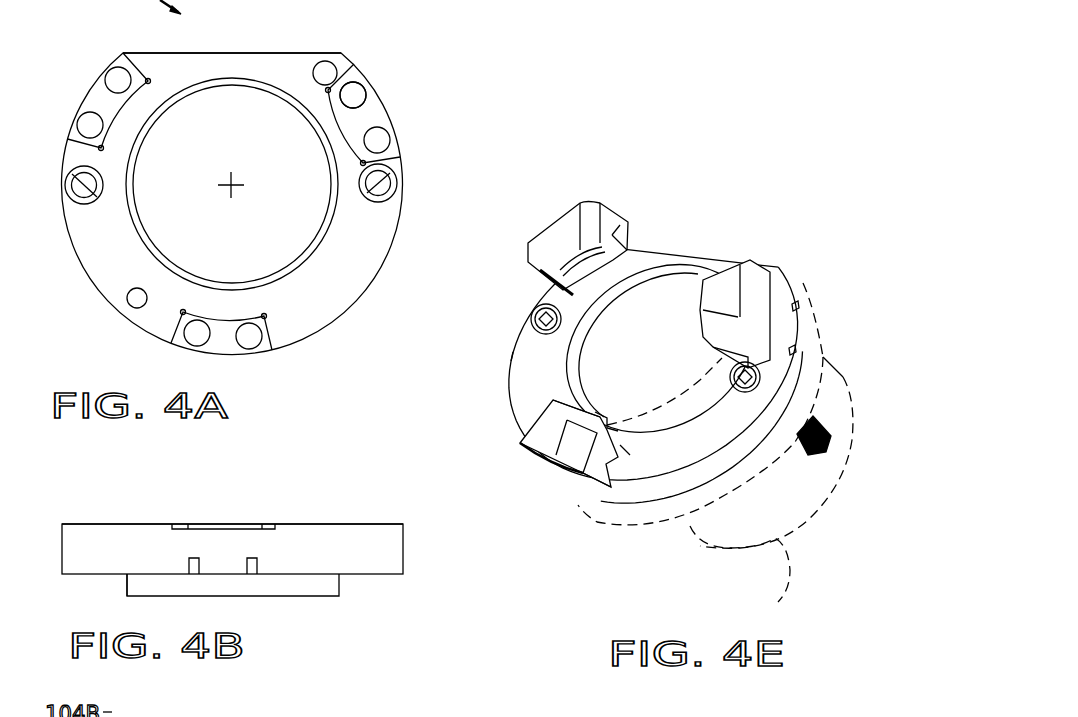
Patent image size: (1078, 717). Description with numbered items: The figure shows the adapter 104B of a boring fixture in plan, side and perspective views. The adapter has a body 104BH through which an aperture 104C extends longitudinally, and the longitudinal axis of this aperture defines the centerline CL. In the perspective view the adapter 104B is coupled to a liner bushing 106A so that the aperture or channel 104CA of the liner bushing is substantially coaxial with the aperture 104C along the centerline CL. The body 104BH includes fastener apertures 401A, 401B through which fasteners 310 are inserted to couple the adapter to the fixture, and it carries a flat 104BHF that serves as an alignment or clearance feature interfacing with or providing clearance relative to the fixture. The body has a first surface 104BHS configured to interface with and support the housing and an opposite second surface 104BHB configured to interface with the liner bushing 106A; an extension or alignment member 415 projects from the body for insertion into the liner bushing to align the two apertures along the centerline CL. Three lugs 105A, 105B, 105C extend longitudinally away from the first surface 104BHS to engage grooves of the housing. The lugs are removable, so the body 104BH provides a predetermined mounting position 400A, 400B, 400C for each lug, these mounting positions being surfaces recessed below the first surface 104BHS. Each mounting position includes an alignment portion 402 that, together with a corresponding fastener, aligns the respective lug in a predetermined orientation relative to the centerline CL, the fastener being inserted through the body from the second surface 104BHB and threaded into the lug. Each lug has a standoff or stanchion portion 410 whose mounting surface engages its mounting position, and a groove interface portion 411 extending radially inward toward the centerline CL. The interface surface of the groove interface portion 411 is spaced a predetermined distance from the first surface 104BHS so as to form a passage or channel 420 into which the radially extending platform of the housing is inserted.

In FIG. 4B, the adapter 104B is at (390, 582).
In FIG. 4E, the adapter 104B is at (633, 493).
In FIG. 4A, the body 104BH is at (148, 331).
In FIG. 4B, the body 104BH is at (171, 538).
In FIG. 4A, the flat 104BHF is at (224, 53).
In FIG. 4E, the flat 104BHF is at (692, 257).
In FIG. 4B, the first surface 104BHS is at (328, 523).
In FIG. 4E, the first surface 104BHS is at (545, 357).
In FIG. 4B, the second surface 104BHB is at (372, 576).
In FIG. 4E, the aperture 104C is at (655, 324).
In FIG. 4E, the aperture of the liner bushing 104CA is at (710, 555).
In FIG. 4E, the lug 105A is at (728, 293).
In FIG. 4E, the lug 105B is at (557, 428).
In FIG. 4E, the lug 105C is at (565, 231).
In FIG. 4E, the liner bushing 106A is at (780, 596).
In FIG. 4E, the fasteners 310 is at (545, 307).
In FIG. 4A, the mounting position 400A is at (368, 115).
In FIG. 4A, the mounting position 400B is at (221, 343).
In FIG. 4A, the mounting position 400C is at (100, 97).
In FIG. 4A, the fastener aperture 401A is at (384, 181).
In FIG. 4A, the fastener aperture 401B is at (92, 198).
In FIG. 4A, the alignment portion 402 is at (353, 85).
In FIG. 4E, the stanchion portion 410 is at (606, 498).
In FIG. 4E, the groove interface portion 411 is at (612, 422).
In FIG. 4B, the alignment member 415 is at (126, 583).
In FIG. 4E, the channel 420 is at (627, 452).
In FIG. 4A, the centerline CL is at (224, 186).